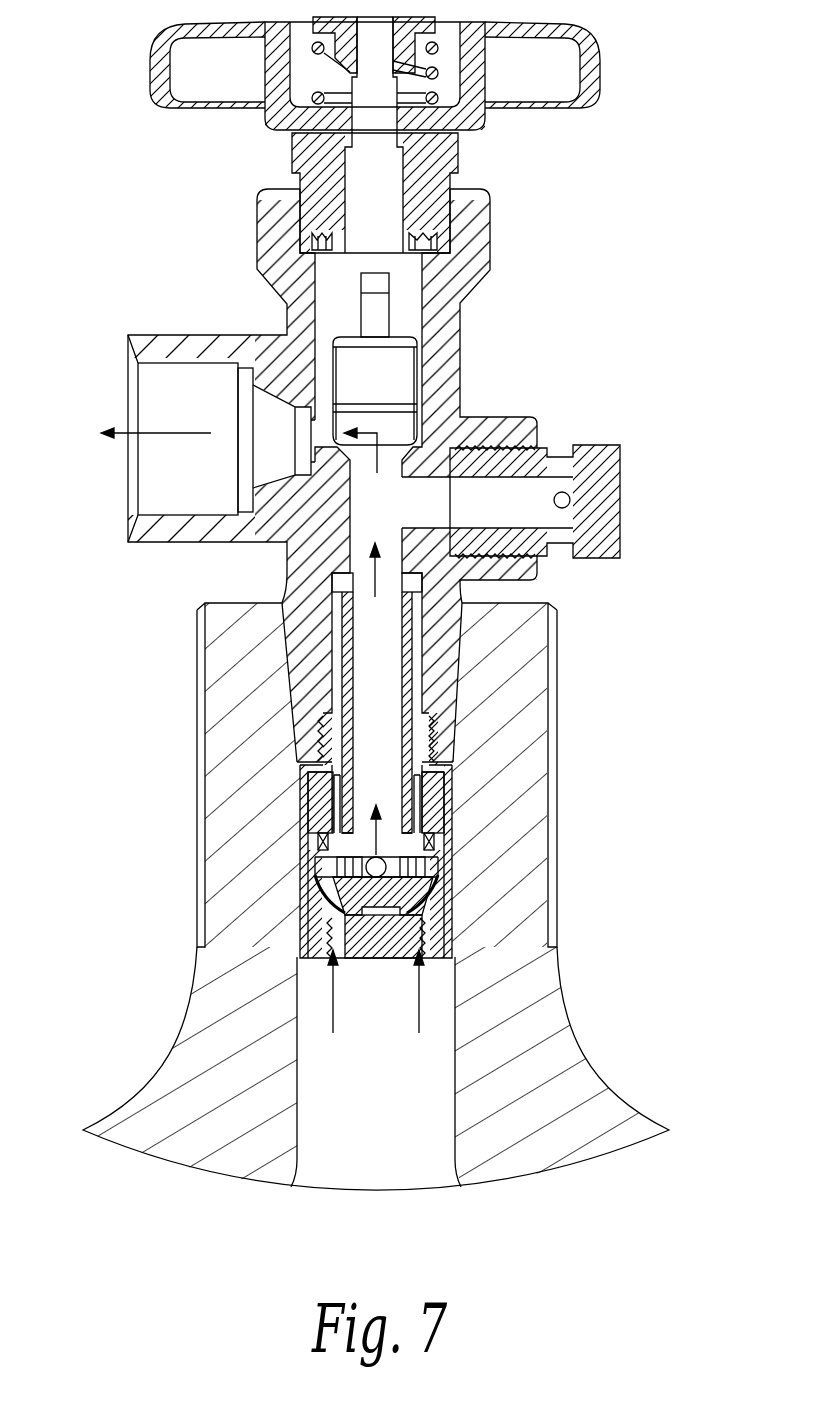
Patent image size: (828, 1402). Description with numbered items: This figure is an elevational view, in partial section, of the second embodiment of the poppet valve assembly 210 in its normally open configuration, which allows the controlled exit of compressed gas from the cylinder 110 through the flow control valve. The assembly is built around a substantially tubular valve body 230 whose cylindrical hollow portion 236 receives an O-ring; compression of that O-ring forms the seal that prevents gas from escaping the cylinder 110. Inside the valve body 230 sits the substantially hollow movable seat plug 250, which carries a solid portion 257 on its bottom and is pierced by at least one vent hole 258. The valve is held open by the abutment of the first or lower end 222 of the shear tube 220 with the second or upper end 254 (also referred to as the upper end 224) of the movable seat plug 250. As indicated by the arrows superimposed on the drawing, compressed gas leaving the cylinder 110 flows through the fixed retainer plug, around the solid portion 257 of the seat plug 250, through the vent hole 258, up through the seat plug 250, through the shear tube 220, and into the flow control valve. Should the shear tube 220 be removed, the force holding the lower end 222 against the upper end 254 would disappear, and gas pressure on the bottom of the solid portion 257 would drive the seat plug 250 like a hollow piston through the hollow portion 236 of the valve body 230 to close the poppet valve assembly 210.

The cylinder 110 is at (574, 1056).
The poppet valve assembly 210 is at (252, 875).
The shear tube 220 is at (402, 688).
The first or lower end of the shear tube 222 is at (425, 775).
The second or upper end of the substantially hollow movable seat plug 224 is at (330, 583).
The substantially tubular valve body 230 is at (437, 845).
The hollow portion of the substantially tubular body 236 is at (317, 810).
The substantially hollow movable seat plug 250 is at (353, 833).
The second or upper end of the substantially hollow movable seat plug 254 is at (338, 787).
The solid portion 257 is at (381, 908).
The vent hole 258 is at (350, 862).